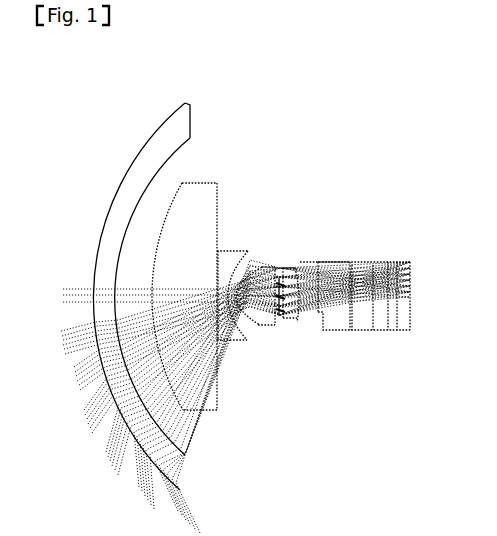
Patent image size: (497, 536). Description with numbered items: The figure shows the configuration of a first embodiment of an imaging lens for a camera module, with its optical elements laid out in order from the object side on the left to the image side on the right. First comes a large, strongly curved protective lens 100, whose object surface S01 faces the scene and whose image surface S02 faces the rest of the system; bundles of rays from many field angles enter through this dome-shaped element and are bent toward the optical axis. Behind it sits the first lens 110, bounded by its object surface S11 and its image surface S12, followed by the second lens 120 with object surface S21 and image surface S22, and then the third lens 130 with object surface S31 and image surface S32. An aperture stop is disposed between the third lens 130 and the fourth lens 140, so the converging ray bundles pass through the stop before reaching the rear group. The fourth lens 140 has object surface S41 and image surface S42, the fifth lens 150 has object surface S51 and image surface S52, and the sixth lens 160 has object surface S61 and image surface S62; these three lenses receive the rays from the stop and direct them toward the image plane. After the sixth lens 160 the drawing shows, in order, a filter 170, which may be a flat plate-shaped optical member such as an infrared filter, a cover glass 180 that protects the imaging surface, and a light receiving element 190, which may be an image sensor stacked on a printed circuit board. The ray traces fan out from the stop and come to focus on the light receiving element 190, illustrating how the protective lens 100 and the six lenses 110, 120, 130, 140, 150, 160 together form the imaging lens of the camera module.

The protective lens 100 is at (192, 481).
The first lens 110 is at (205, 412).
The second lens 120 is at (237, 343).
The third lens 130 is at (265, 331).
The fourth lens 140 is at (300, 327).
The fifth lens 150 is at (337, 332).
The sixth lens 160 is at (363, 329).
The filter 170 is at (382, 333).
The cover glass 180 is at (395, 334).
The light receiving element 190 is at (409, 330).
The aperture stop is at (285, 318).
The object surface of the protective lens S01 is at (165, 120).
The image surface of the protective lens S02 is at (191, 118).
The object surface of the first lens S11 is at (180, 182).
The image surface of the first lens S12 is at (218, 190).
The object surface of the second lens S21 is at (218, 251).
The image surface of the second lens S22 is at (252, 251).
The object surface of the third lens S31 is at (255, 342).
The image surface of the third lens S32 is at (278, 342).
The object surface of the fourth lens S41 is at (279, 277).
The image surface of the fourth lens S42 is at (296, 270).
The object surface of the fifth lens S51 is at (318, 262).
The image surface of the fifth lens S52 is at (350, 262).
The object surface of the sixth lens S61 is at (352, 330).
The image surface of the sixth lens S62 is at (373, 329).